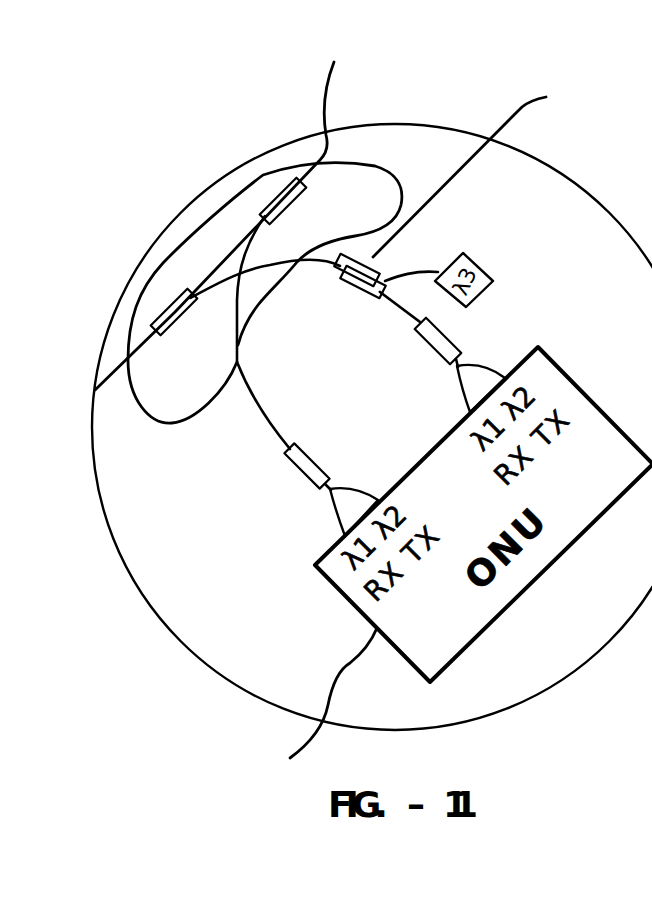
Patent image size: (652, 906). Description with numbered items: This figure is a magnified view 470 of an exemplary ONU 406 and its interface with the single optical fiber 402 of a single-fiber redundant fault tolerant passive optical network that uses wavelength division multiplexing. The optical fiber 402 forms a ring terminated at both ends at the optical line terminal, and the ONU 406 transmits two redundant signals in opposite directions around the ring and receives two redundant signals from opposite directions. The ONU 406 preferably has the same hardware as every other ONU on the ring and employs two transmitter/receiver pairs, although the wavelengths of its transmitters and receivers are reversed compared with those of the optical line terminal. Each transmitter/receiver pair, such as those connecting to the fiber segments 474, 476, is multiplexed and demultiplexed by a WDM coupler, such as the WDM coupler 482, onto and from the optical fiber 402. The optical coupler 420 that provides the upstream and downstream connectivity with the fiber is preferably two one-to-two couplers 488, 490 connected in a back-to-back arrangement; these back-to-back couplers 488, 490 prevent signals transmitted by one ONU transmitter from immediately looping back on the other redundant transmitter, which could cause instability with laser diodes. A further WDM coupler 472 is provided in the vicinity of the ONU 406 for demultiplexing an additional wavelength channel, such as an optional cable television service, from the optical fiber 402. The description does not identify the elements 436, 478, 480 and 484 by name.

The optical fiber 402 is at (251, 209).
The ONU 406 is at (308, 712).
The tap coupler 420 is at (205, 228).
The node enclosure 436 is at (547, 691).
The magnified view 470 is at (110, 205).
The WDM coupler 472 is at (498, 197).
The fiber segment 474 is at (478, 368).
The fiber segment 476 is at (458, 384).
The second ONU transceiver port 478 is at (352, 488).
The second connecting fiber 480 is at (334, 515).
The WDM coupler 482 is at (420, 349).
The optical coupler 484 is at (298, 470).
The 1:2 coupler 488 is at (294, 212).
The 1:2 coupler 490 is at (178, 318).